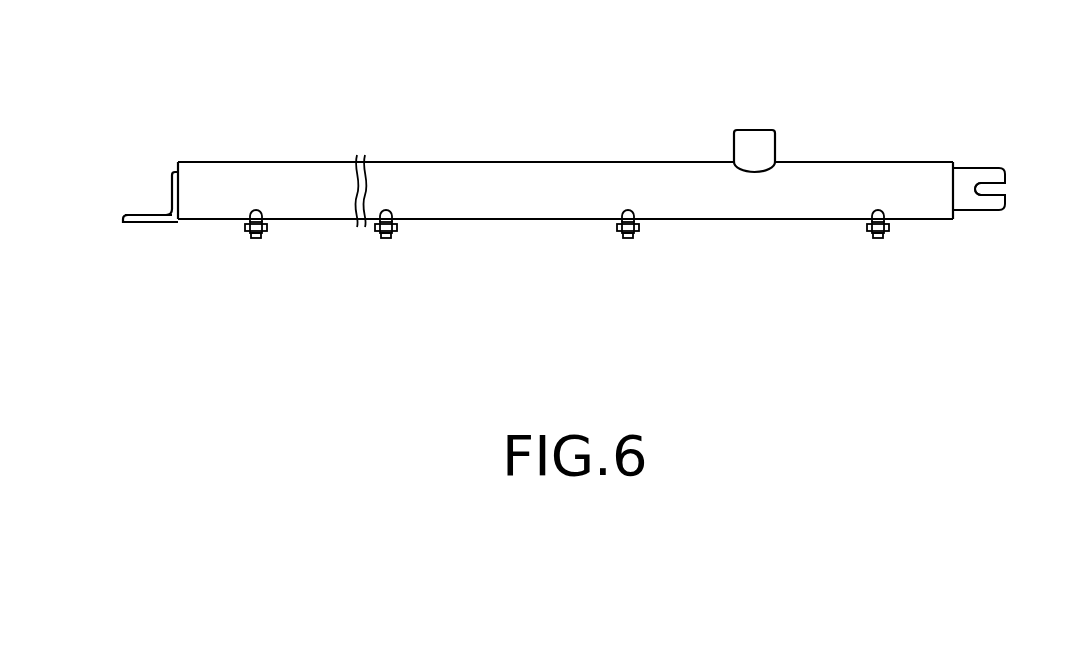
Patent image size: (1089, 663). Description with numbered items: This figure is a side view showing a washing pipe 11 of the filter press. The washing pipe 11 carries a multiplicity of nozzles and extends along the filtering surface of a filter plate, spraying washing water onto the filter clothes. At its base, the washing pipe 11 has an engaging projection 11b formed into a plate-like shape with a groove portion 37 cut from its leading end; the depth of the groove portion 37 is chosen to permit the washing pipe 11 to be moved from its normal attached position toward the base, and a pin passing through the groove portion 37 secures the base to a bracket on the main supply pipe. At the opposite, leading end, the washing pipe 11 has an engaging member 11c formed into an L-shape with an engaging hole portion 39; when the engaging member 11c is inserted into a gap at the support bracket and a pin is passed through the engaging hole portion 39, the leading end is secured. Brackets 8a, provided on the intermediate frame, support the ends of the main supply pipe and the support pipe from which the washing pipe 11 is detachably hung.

The washing pipe 11 is at (527, 182).
The engaging projection 11b is at (981, 176).
The engaging member 11c is at (172, 200).
The groove portion 37 is at (1000, 187).
The engaging hole portion 39 is at (145, 225).
The bracket 8a is at (386, 238).